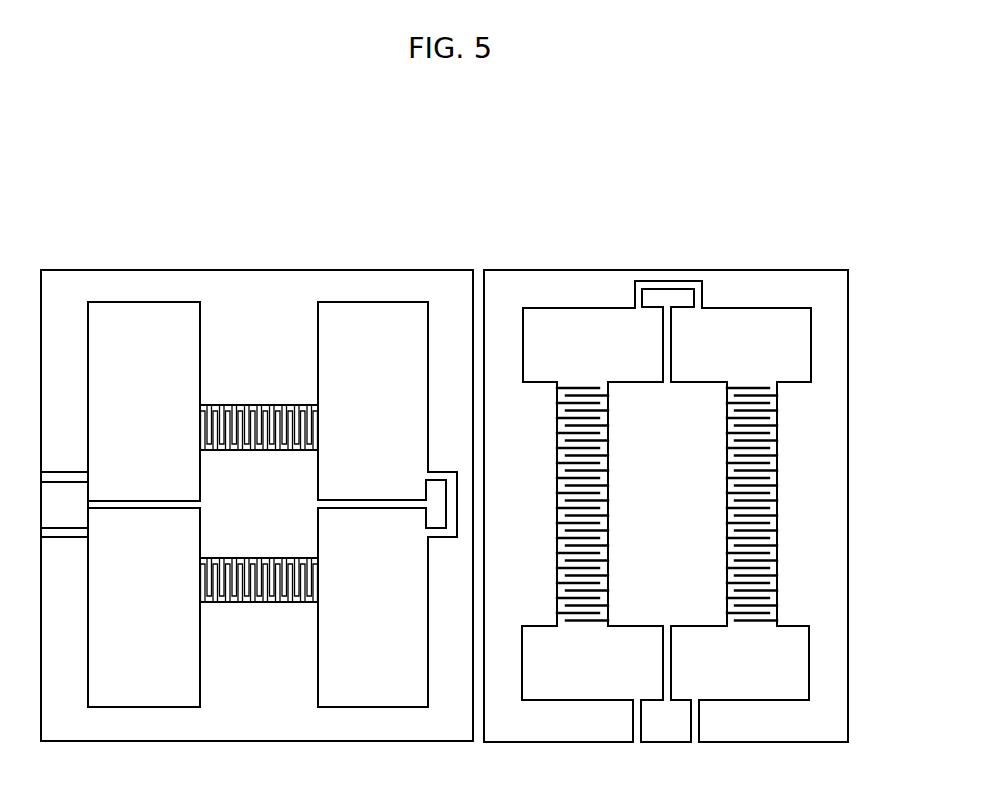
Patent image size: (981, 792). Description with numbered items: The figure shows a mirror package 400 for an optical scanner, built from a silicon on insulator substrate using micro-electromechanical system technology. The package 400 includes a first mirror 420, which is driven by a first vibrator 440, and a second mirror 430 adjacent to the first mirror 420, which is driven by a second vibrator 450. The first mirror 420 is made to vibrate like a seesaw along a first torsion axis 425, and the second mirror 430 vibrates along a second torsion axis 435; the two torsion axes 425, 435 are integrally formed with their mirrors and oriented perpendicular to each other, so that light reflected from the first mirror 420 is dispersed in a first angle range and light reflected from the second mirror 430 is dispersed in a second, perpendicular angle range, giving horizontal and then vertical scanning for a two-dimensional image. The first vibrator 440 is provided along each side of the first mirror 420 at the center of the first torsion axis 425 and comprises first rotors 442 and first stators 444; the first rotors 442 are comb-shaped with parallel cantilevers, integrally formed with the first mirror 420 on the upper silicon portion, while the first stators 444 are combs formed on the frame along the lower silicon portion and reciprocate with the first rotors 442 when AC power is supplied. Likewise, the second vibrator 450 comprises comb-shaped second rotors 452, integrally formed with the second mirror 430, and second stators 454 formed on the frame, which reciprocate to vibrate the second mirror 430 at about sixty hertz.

The mirror package 400 is at (257, 461).
The first mirror 420 is at (207, 543).
The first torsion axis 425 is at (135, 498).
The second mirror 430 is at (703, 435).
The second torsion axis 435 is at (672, 345).
The first vibrator 440 is at (310, 315).
The first rotors 442 is at (313, 432).
The first stators 444 is at (307, 427).
The second vibrator 450 is at (649, 399).
The second rotors 452 is at (587, 393).
The second stators 454 is at (570, 388).